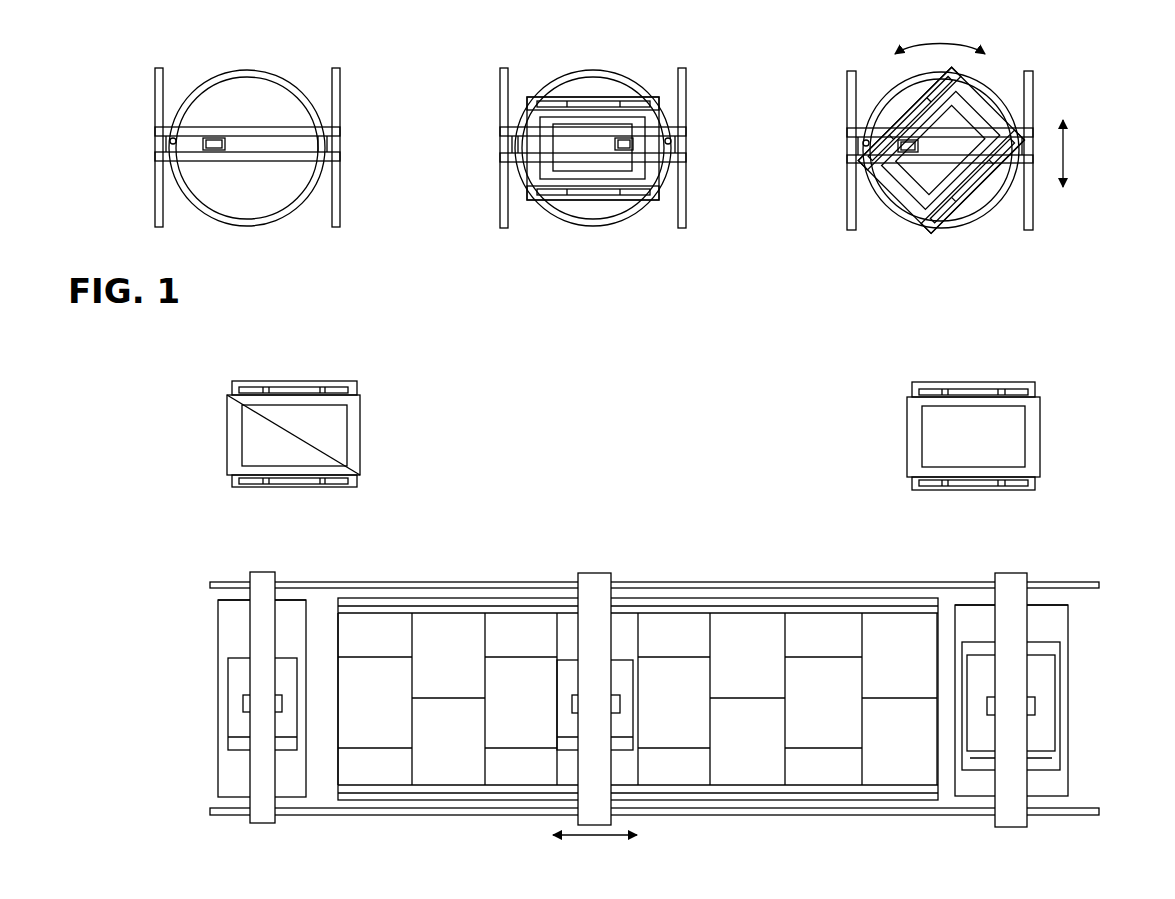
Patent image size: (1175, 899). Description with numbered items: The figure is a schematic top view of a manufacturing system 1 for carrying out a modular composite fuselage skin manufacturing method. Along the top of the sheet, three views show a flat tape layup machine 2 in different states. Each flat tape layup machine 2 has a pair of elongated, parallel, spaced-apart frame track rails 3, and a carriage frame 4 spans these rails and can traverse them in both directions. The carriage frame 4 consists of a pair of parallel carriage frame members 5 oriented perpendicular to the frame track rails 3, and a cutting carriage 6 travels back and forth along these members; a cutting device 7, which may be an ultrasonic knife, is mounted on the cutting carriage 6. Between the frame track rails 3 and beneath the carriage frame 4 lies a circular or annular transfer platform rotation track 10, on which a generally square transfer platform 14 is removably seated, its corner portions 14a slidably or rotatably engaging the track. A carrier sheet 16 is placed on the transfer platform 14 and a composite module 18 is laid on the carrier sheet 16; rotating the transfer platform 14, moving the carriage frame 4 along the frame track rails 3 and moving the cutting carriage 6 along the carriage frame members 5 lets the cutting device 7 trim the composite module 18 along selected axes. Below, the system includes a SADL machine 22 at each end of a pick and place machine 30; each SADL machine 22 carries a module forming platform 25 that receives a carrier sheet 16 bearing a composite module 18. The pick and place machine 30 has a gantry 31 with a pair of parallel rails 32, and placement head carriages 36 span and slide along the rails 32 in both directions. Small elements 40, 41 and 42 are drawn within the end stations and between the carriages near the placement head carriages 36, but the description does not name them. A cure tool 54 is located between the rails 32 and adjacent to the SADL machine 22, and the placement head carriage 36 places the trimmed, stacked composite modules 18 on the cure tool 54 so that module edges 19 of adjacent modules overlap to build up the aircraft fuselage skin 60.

The manufacturing system 1 is at (113, 60).
The flat tape layup machine 2 is at (148, 96).
The frame track rails 3 is at (155, 205).
The carriage frame 4 is at (278, 126).
The carriage frame members 5 is at (569, 155).
The cutting carriage 6 is at (188, 145).
The cutting device 7 is at (170, 140).
The transfer platform rotation track 10 is at (255, 222).
The transfer platform 14 is at (600, 92).
The corner portions 14a is at (526, 99).
The carrier sheet 16 is at (566, 218).
The composite module 18 is at (585, 172).
The module edges 19 is at (413, 627).
The SADL machine 22 is at (643, 670).
The module forming platform 25 is at (228, 607).
The pick and place machine 30 is at (487, 565).
The gantry 31 is at (856, 578).
The rails 32 is at (710, 583).
The placement head carriage 36 is at (262, 578).
The coupling 40 is at (226, 700).
The coupling element 41 is at (240, 737).
The receptacle 42 is at (242, 696).
The cure tool 54 is at (375, 596).
The aircraft fuselage skin 60 is at (335, 762).